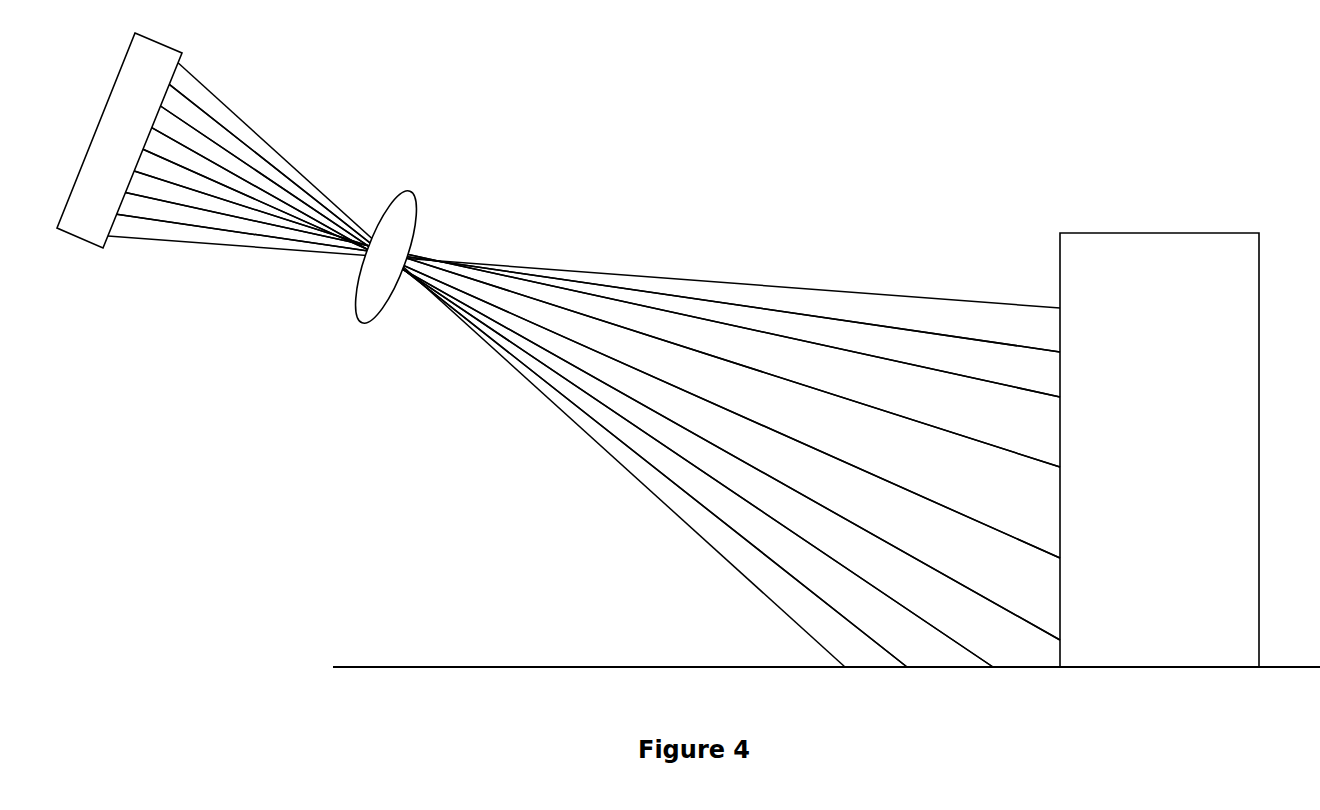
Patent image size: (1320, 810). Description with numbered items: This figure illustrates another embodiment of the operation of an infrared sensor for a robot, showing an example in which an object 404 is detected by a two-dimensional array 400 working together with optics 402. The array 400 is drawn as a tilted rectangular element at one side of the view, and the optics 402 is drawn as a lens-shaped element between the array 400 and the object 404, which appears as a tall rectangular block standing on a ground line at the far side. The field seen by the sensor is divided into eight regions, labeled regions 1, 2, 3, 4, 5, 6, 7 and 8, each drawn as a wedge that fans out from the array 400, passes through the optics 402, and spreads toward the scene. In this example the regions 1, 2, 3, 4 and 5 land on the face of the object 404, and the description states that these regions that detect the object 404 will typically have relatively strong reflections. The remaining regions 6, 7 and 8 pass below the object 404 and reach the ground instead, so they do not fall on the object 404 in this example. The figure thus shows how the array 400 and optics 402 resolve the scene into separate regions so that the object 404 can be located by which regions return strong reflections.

The 2D array 400 is at (126, 46).
The optics 402 is at (411, 192).
The object 404 is at (1207, 233).
The region 1 is at (584, 283).
The region 2 is at (588, 295).
The region 3 is at (592, 319).
The region 4 is at (597, 353).
The region 5 is at (601, 384).
The region 6 is at (606, 386).
The region 7 is at (577, 375).
The region 8 is at (538, 365).